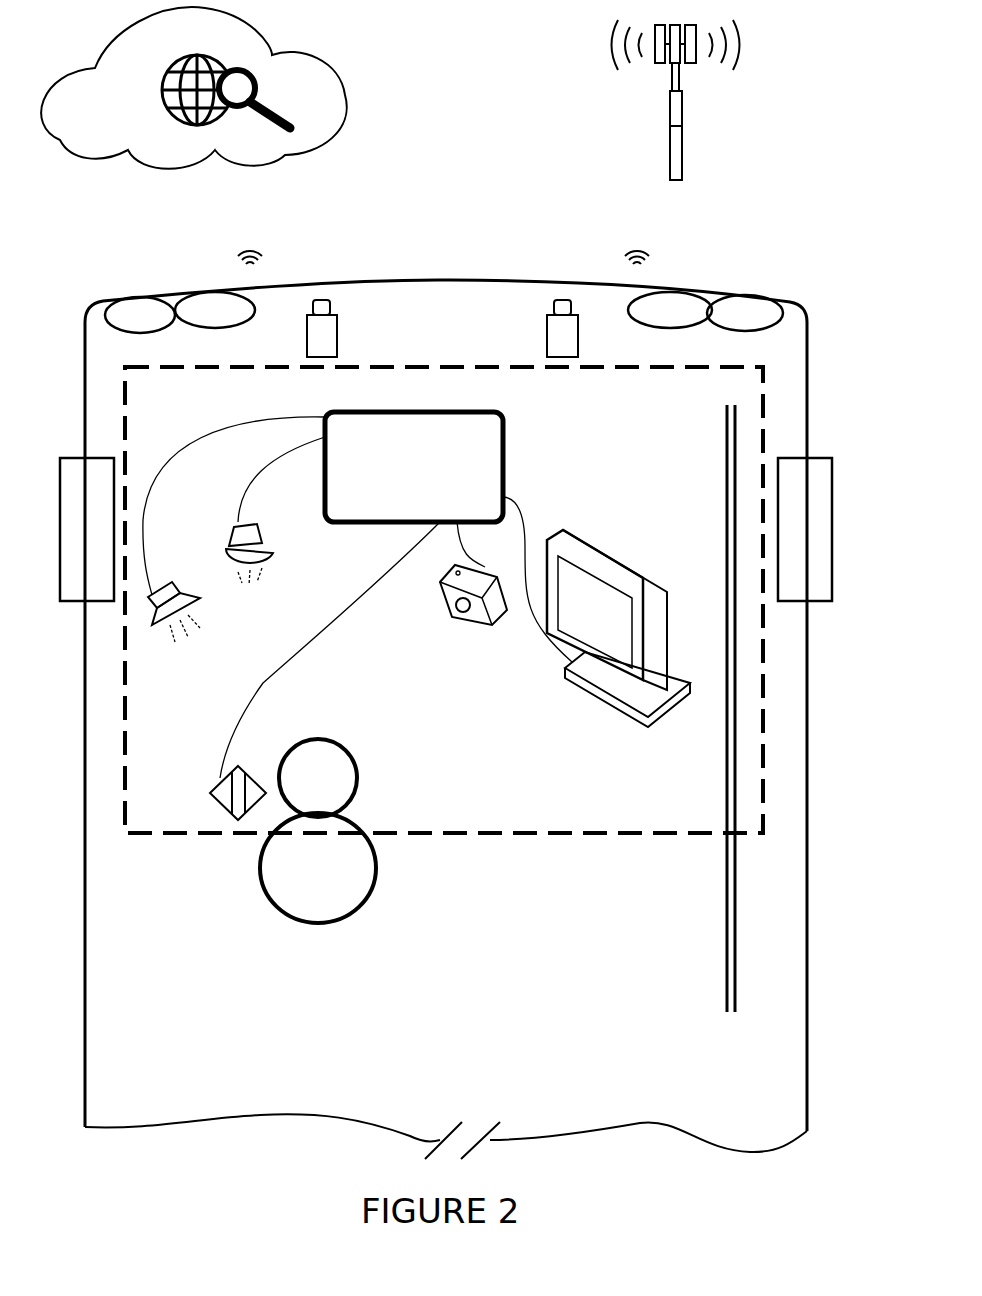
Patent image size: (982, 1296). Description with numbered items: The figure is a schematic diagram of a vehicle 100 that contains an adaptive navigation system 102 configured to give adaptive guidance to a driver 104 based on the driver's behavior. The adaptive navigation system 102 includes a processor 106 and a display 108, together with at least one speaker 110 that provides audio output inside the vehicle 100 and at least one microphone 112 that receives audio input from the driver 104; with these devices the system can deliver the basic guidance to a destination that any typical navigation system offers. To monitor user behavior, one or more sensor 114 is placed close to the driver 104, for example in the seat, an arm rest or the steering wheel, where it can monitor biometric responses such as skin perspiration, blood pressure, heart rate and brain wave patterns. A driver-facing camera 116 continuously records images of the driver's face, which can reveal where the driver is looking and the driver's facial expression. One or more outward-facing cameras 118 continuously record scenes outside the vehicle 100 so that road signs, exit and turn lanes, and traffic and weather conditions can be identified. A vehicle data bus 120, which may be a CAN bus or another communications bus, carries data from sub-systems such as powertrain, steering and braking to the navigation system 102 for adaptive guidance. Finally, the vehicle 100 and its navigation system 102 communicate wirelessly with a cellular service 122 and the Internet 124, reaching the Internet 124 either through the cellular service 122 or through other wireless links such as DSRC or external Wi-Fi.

The vehicle 100 is at (447, 280).
The adaptive navigation system 102 is at (500, 837).
The driver 104 is at (318, 831).
The processor 106 is at (414, 467).
The display 108 is at (617, 554).
The speaker 110 is at (177, 585).
The microphone 112 is at (273, 549).
The sensor 114 is at (213, 793).
The driver-facing camera 116 is at (450, 615).
The outward-facing camera 118 is at (547, 333).
The vehicle data bus 120 is at (727, 952).
The cellular service 122 is at (670, 162).
The Internet 124 is at (303, 72).